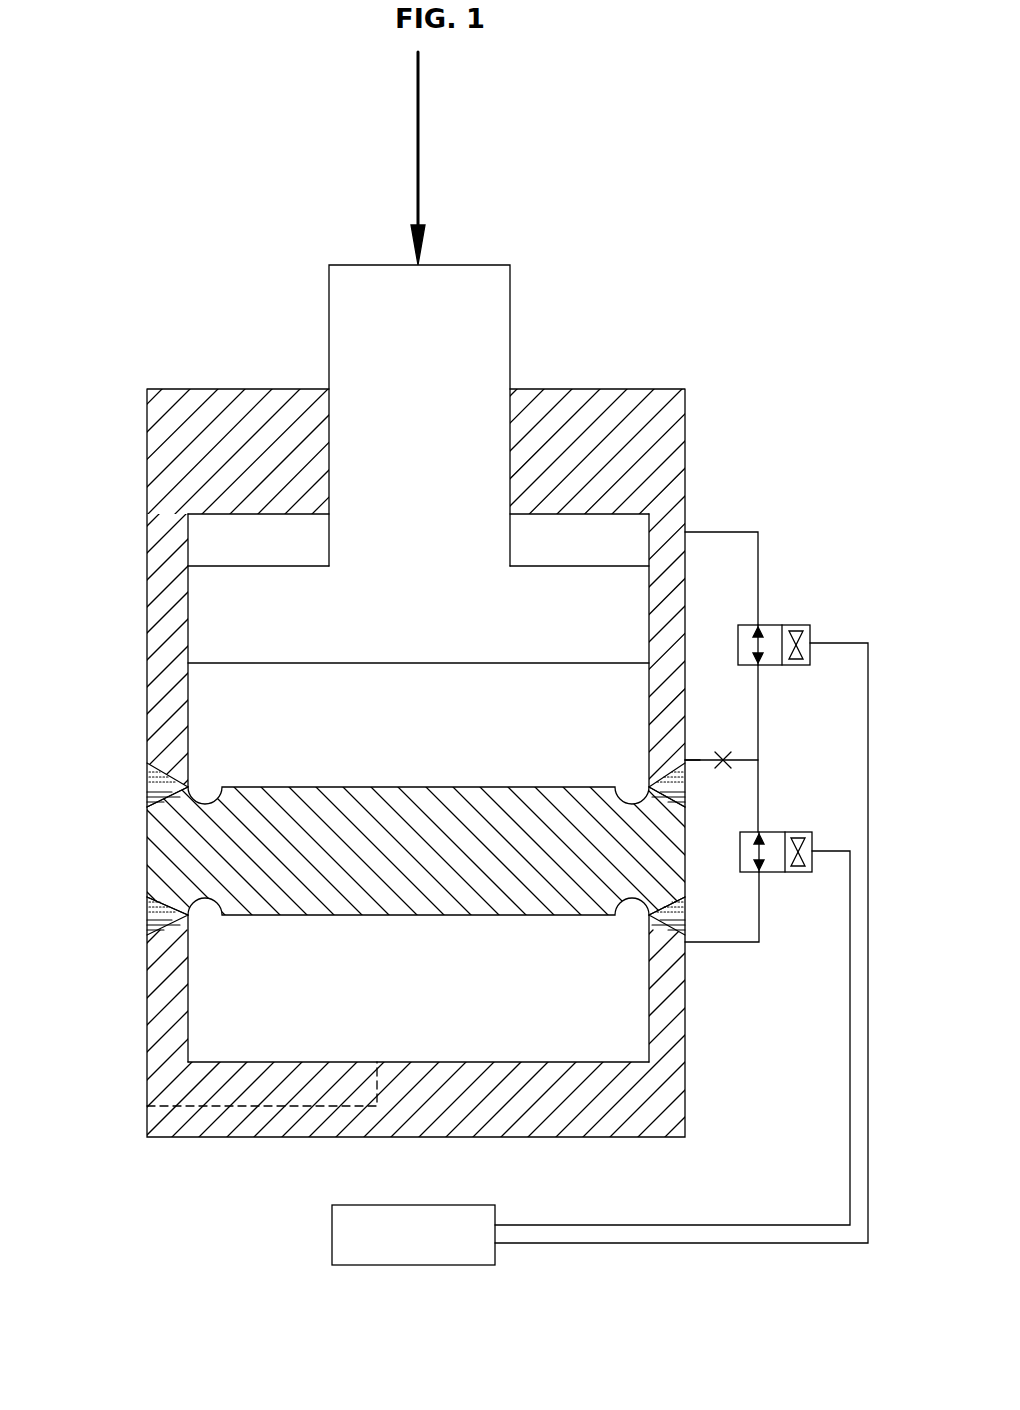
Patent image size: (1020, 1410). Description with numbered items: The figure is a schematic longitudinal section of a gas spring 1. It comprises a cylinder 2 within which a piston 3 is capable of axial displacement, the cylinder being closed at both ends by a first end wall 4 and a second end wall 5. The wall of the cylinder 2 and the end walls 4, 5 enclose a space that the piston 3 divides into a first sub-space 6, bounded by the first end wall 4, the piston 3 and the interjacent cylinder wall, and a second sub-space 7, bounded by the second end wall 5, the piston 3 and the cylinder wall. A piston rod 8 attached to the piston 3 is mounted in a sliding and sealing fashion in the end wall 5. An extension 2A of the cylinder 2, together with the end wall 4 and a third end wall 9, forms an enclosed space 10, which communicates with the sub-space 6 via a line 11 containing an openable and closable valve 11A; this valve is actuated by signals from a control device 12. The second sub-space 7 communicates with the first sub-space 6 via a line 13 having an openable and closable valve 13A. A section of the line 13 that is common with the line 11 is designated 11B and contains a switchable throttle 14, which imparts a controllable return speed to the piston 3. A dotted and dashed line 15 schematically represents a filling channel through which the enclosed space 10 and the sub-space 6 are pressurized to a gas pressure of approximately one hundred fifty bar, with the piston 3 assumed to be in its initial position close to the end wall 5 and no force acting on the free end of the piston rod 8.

The gas spring 1 is at (708, 444).
The cylinder 2 is at (510, 746).
The extension of the cylinder 2A is at (160, 958).
The piston 3 is at (245, 588).
The first end wall 4 is at (212, 832).
The second end wall 5 is at (218, 430).
The first sub-space 6 is at (232, 700).
The second sub-space 7 is at (223, 538).
The piston rod 8 is at (485, 347).
The third end wall 9 is at (282, 1120).
The enclosed space 10 is at (225, 992).
The line 11 is at (760, 802).
The valve 11A is at (797, 872).
The common line section 11B is at (697, 765).
The control device 12 is at (425, 1265).
The line 13 is at (760, 552).
The valve 13A is at (817, 598).
The switchable throttle 14 is at (723, 757).
The filling channel 15 is at (150, 1128).